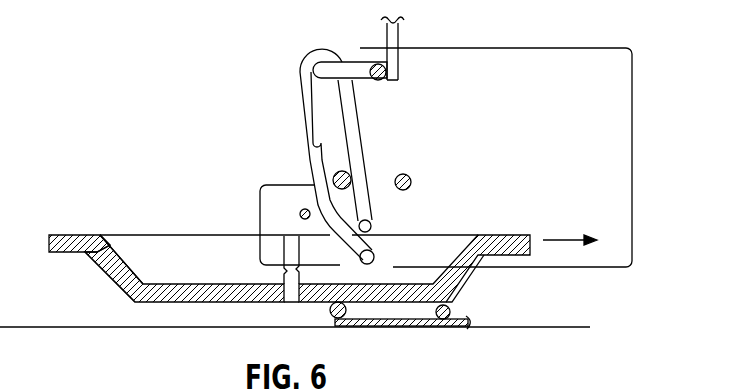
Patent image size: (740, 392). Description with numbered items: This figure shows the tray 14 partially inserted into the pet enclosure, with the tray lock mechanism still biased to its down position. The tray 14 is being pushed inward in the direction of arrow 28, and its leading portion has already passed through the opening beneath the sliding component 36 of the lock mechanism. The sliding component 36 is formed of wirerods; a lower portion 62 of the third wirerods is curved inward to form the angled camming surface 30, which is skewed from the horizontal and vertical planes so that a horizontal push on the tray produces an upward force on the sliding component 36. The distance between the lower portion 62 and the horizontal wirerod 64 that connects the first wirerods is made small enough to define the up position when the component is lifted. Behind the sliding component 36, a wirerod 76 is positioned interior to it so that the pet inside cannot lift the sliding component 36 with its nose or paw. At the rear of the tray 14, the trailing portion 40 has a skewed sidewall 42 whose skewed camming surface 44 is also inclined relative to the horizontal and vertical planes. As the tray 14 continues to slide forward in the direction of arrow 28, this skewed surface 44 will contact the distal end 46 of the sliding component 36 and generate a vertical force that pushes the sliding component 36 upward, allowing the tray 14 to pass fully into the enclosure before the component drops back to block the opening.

The tray 14 is at (160, 175).
The trailing portion 40 is at (48, 218).
The skewed sidewall 42 is at (107, 272).
The skewed camming surface 44 is at (122, 253).
The camming surface 30 is at (337, 248).
The lower portion 62 is at (260, 200).
The horizontal wirerod 64 is at (371, 224).
The distal end 46 is at (375, 259).
The wirerod 76 is at (412, 175).
The sliding component 36 is at (634, 50).
The arrow 28 is at (557, 233).